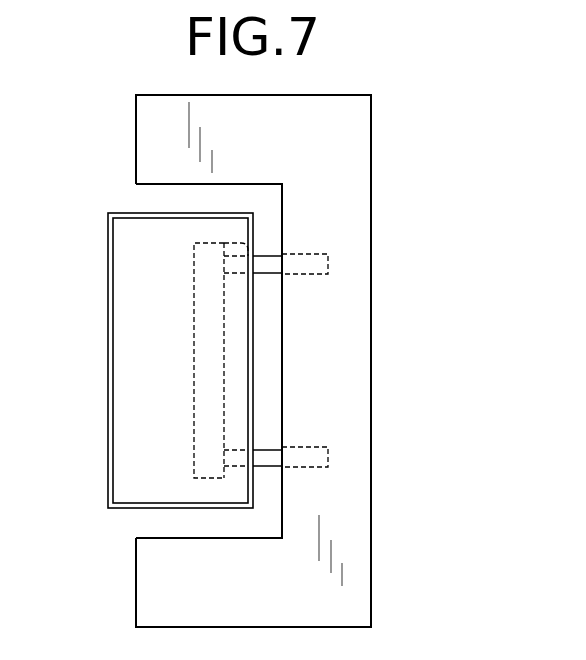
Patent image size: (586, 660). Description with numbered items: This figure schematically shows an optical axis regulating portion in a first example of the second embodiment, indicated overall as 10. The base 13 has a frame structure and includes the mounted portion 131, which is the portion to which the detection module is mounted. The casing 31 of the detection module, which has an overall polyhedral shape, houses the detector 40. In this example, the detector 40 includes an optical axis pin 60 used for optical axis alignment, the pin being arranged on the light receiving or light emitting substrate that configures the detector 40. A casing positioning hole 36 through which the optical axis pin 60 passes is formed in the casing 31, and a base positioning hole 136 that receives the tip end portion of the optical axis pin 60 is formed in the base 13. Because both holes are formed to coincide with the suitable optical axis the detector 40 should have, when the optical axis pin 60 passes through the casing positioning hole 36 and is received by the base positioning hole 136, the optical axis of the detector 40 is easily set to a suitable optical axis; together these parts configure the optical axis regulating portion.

The image forming apparatus 10 is at (465, 355).
The base 13 is at (371, 120).
The mounted portion 131 is at (231, 534).
The base positioning hole 136 is at (328, 254).
The casing 31 is at (108, 240).
The casing positioning hole 36 is at (226, 243).
The detector 40 is at (194, 440).
The optical axis pin 60 is at (280, 256).